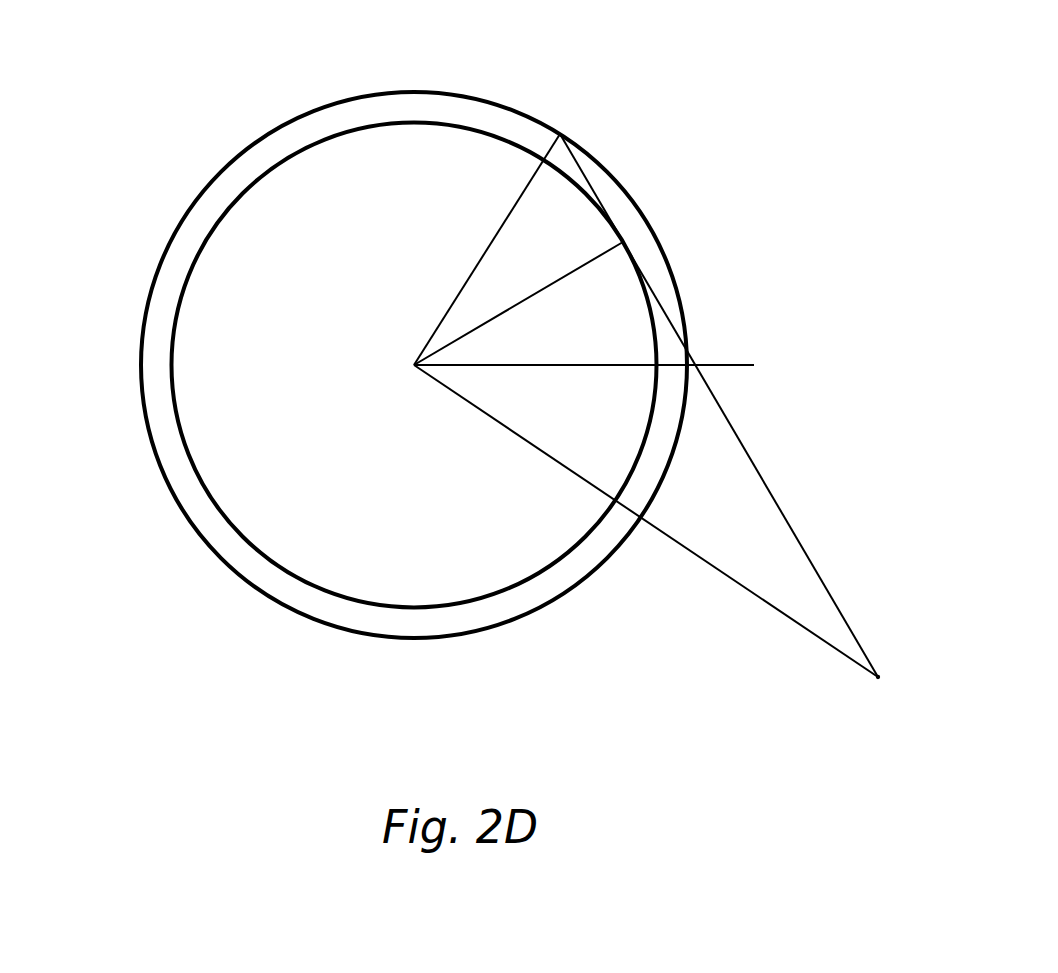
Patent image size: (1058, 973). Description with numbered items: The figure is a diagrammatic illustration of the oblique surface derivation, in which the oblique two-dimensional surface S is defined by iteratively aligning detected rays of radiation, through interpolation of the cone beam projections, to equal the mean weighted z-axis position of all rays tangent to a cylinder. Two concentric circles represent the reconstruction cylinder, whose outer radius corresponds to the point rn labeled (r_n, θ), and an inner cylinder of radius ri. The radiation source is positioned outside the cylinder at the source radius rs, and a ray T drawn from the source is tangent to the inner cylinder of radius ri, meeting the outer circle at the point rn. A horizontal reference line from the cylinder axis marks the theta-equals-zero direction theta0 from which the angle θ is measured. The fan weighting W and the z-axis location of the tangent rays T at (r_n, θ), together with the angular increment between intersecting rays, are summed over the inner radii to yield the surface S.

The oblique two-dimensional surface S is at (274, 54).
The tangent rays T is at (719, 405).
The source radius rs is at (646, 521).
The inner cylinder radius ri is at (518, 303).
The point (r_n, θ) on outer radius rn is at (527, 229).
The theta equals zero reference axis theta0 is at (623, 365).
The source at radius r_s source is at (866, 724).